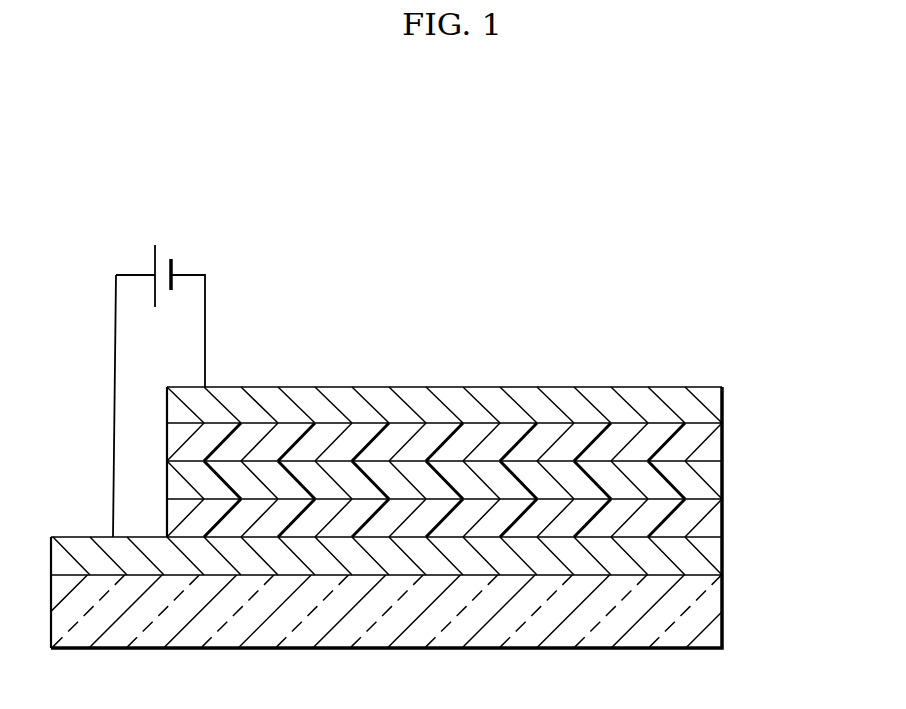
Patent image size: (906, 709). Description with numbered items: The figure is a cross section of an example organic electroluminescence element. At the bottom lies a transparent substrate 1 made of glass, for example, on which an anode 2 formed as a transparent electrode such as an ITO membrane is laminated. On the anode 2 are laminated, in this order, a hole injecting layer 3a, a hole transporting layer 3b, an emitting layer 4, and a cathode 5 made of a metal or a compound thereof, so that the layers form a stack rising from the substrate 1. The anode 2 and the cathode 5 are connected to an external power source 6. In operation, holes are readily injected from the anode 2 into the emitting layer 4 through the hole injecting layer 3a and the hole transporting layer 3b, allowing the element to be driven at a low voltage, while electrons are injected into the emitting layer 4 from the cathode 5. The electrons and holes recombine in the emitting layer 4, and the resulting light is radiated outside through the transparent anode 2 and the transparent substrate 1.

The transparent substrate 1 is at (687, 615).
The anode 2 is at (683, 560).
The hole injecting layer 3a is at (683, 523).
The hole transporting layer 3b is at (685, 482).
The emitting layer 4 is at (683, 447).
The cathode 5 is at (645, 400).
The external power source 6 is at (167, 240).